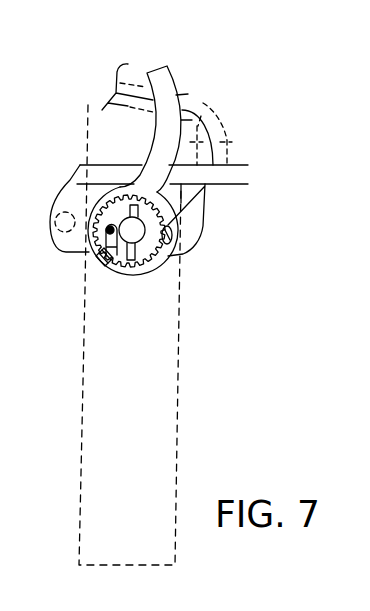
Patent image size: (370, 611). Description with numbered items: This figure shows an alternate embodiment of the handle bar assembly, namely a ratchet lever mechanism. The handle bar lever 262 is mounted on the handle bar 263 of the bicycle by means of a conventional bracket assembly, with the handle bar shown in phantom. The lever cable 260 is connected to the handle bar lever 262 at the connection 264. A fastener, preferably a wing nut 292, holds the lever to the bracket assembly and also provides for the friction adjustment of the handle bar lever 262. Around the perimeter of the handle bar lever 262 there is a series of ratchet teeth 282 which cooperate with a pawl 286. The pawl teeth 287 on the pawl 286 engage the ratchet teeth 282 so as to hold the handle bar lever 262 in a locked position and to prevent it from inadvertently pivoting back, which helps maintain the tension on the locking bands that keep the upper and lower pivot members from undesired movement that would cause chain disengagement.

The lever cable 260 is at (128, 93).
The handle bar lever 262 is at (168, 70).
The handle bar 263 is at (147, 390).
The connection 264 is at (175, 247).
The ratchet teeth 282 is at (90, 272).
The pawl 286 is at (97, 258).
The pawl teeth 287 is at (99, 270).
The wing nut 292 is at (147, 280).